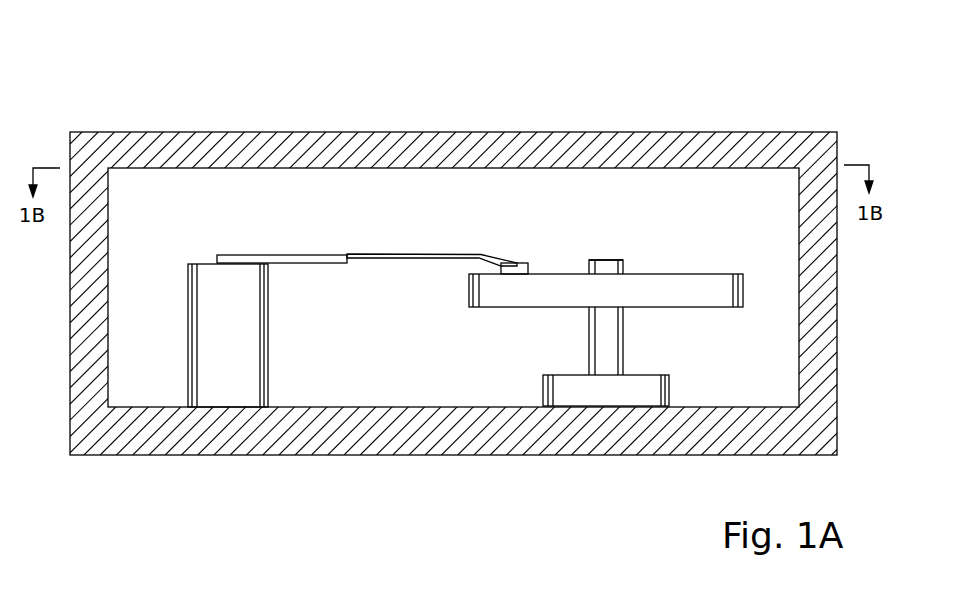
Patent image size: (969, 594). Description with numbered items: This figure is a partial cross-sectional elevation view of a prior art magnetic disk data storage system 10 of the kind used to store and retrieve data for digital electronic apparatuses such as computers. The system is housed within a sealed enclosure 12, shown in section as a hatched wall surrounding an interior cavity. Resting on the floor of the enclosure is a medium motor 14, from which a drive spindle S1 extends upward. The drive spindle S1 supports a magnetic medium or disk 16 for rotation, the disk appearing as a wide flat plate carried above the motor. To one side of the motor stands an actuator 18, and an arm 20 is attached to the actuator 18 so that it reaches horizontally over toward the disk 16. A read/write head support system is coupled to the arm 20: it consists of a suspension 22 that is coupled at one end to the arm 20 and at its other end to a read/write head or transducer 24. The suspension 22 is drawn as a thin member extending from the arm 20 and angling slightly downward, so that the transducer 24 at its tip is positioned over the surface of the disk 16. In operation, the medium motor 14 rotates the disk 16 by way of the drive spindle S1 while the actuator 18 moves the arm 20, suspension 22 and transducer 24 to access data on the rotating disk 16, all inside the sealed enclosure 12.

The magnetic disk data storage system 10 is at (784, 96).
The sealed enclosure 12 is at (438, 450).
The medium motor 14 is at (608, 392).
The magnetic medium or disk 16 is at (690, 280).
The drive spindle S1 is at (612, 263).
The actuator 18 is at (253, 367).
The arm 20 is at (323, 257).
The suspension 22 is at (417, 258).
The read/write head or transducer 24 is at (528, 268).